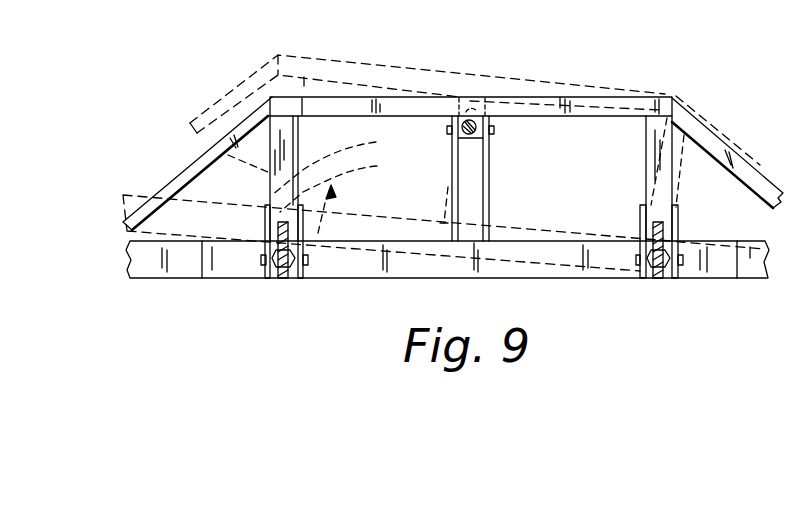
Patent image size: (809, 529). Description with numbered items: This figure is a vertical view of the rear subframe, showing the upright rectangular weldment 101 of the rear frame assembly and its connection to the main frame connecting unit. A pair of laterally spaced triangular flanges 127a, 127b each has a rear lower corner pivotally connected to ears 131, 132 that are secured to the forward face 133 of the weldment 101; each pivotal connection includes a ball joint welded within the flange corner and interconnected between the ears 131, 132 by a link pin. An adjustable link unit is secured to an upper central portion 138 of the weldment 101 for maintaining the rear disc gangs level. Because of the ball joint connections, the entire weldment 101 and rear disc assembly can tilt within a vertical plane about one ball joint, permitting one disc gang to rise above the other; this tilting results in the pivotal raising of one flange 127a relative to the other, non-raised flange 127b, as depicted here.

The weldment 101 is at (378, 98).
The ear 131 is at (232, 150).
The ear 132 is at (718, 214).
The forward face 133 is at (300, 135).
The flange 127a is at (240, 308).
The flange 127b is at (660, 281).
The upper central portion 138 is at (283, 287).